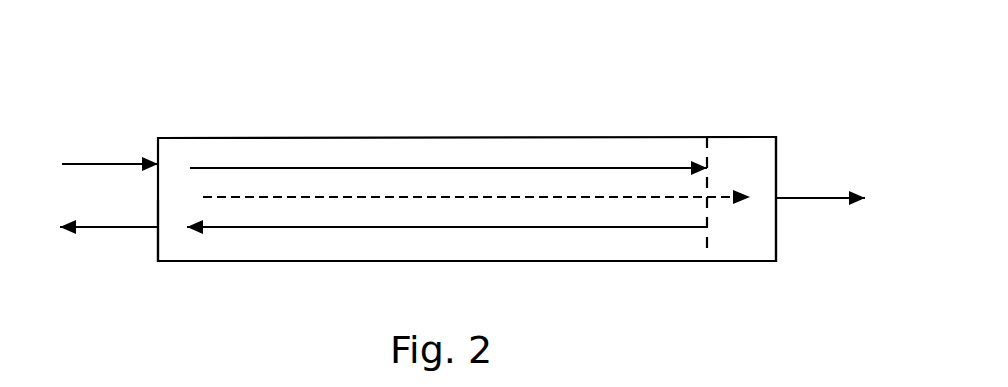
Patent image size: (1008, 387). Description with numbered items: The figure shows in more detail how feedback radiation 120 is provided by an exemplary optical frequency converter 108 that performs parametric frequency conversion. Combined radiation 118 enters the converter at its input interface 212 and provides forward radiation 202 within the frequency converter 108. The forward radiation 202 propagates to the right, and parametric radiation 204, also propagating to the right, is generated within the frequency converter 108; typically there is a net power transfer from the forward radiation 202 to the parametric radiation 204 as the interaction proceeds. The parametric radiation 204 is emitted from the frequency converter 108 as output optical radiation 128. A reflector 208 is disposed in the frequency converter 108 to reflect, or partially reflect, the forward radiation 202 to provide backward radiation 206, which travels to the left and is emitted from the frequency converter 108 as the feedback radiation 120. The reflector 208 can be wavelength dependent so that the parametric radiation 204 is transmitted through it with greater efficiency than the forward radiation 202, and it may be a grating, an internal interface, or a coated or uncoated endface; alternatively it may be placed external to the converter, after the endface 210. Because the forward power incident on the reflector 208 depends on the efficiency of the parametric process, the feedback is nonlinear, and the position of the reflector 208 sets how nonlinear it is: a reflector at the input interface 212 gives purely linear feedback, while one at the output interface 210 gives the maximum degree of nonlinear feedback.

The optical frequency converter 108 is at (245, 138).
The combined radiation 118 is at (97, 163).
The feedback radiation 120 is at (107, 228).
The output optical radiation 128 is at (805, 198).
The forward radiation 202 is at (360, 168).
The parametric radiation 204 is at (475, 195).
The backward radiation 206 is at (590, 227).
The reflector 208 is at (707, 237).
The endface 210 is at (778, 233).
The input interface 212 is at (160, 243).